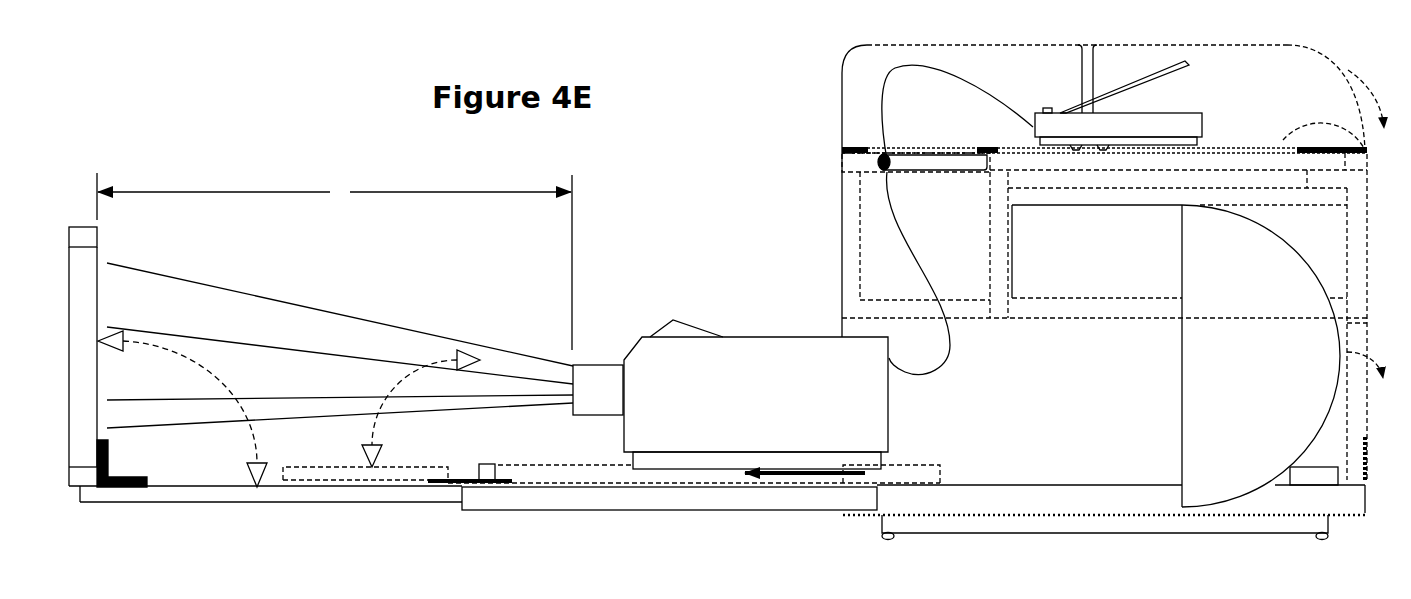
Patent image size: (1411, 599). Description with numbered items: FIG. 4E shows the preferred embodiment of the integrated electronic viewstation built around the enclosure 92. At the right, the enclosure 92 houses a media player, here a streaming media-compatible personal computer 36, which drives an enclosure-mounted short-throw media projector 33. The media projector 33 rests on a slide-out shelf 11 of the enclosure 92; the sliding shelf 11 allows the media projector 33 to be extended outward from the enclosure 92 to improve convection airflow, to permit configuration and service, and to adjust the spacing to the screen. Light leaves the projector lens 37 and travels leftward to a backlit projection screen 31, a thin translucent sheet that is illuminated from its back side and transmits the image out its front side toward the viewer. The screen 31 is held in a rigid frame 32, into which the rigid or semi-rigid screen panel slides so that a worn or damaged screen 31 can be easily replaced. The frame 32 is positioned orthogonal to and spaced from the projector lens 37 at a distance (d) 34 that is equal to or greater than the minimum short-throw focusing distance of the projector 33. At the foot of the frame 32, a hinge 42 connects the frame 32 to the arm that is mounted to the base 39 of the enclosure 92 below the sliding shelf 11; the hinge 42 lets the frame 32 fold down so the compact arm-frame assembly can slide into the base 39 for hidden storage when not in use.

The slide-out shelf 11 is at (611, 466).
The backlit projection screen 31 is at (340, 341).
The rigid frame 32 is at (82, 238).
The media projector 33 is at (756, 374).
The distance (d) 34 is at (344, 186).
The personal computer 36 is at (1142, 105).
The projector lens 37 is at (578, 365).
The base 39 is at (1104, 477).
The hinge 42 is at (151, 463).
The enclosure 92 is at (841, 230).